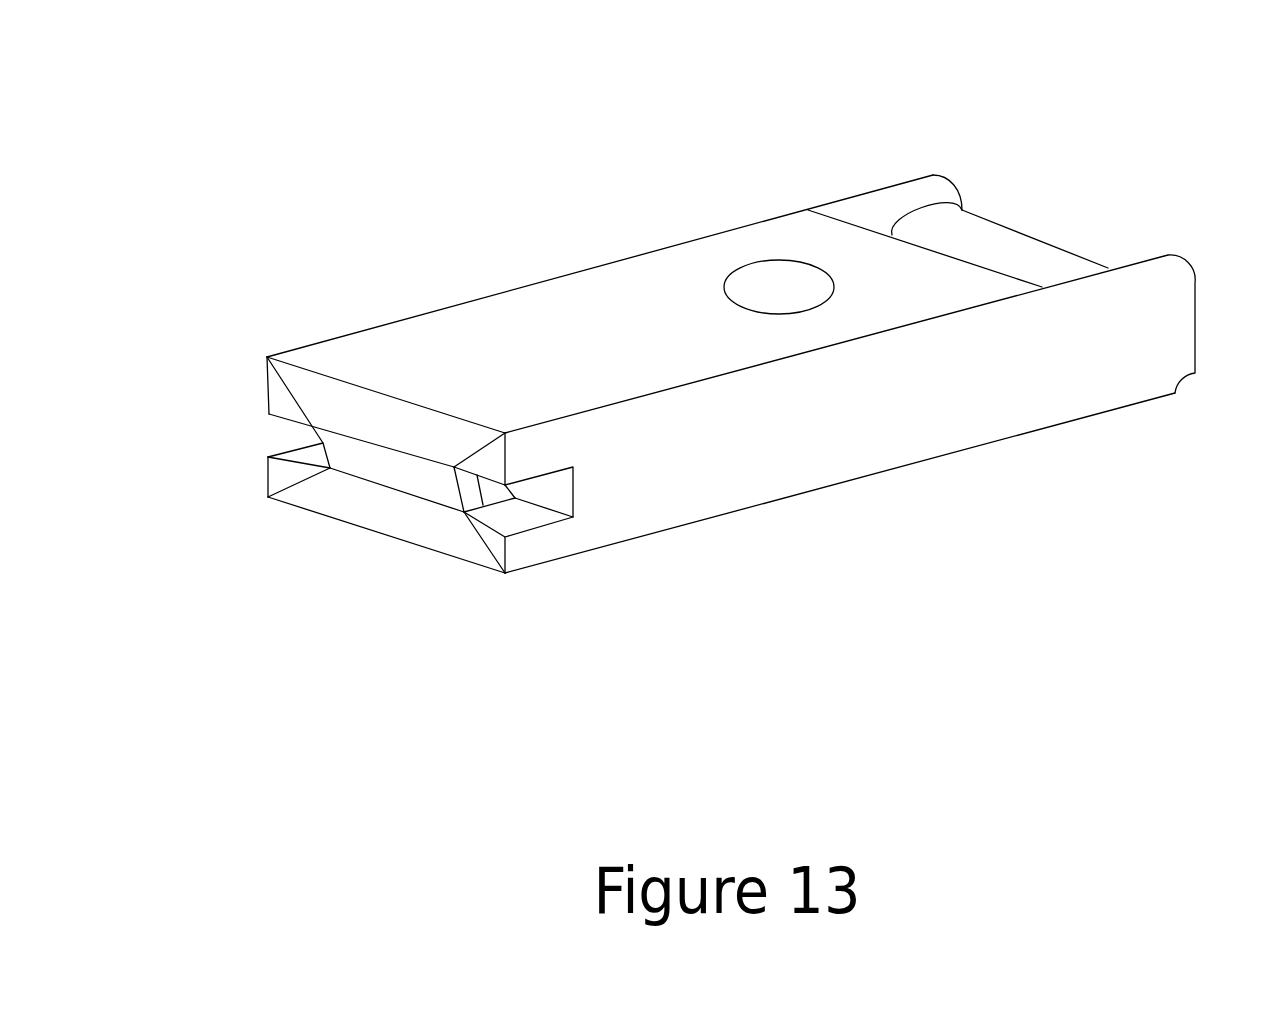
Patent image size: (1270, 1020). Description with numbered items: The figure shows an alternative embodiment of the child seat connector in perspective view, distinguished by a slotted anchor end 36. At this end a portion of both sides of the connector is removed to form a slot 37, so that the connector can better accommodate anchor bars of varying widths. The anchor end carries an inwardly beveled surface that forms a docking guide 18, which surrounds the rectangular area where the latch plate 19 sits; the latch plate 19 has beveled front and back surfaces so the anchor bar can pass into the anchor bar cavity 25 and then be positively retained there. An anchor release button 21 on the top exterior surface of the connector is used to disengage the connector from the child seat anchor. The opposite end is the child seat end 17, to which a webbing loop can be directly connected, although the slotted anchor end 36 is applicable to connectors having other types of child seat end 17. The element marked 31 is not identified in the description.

The child seat end 17 is at (1163, 420).
The docking guide 18 is at (282, 477).
The latch plate 19 is at (438, 490).
The anchor release button 21 is at (773, 288).
The anchor bar cavity 25 is at (497, 492).
The rib 31 is at (1002, 250).
The slotted anchor end 36 is at (678, 550).
The slot 37 is at (543, 518).